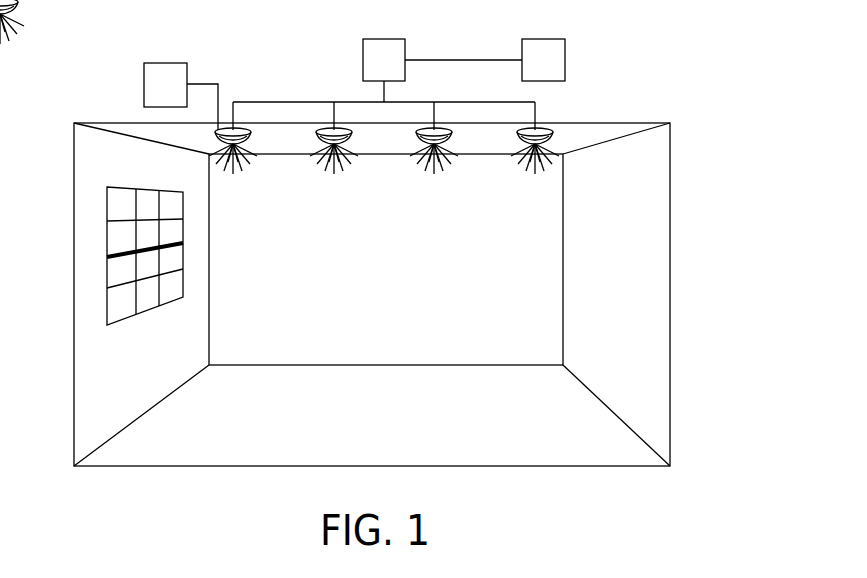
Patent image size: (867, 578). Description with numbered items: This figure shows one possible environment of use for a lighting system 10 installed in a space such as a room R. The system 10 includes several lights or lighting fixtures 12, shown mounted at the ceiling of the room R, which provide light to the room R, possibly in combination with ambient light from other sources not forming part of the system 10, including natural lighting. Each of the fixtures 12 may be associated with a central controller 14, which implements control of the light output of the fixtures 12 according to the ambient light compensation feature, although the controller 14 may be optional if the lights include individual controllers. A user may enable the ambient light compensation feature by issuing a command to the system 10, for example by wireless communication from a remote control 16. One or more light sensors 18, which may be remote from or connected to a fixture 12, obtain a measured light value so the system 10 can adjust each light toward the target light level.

The lighting system 10 is at (650, 52).
The lighting fixtures 12 is at (553, 130).
The central controller 14 is at (399, 74).
The remote control 16 is at (559, 74).
The light sensors 18 is at (180, 96).
The room R is at (670, 236).